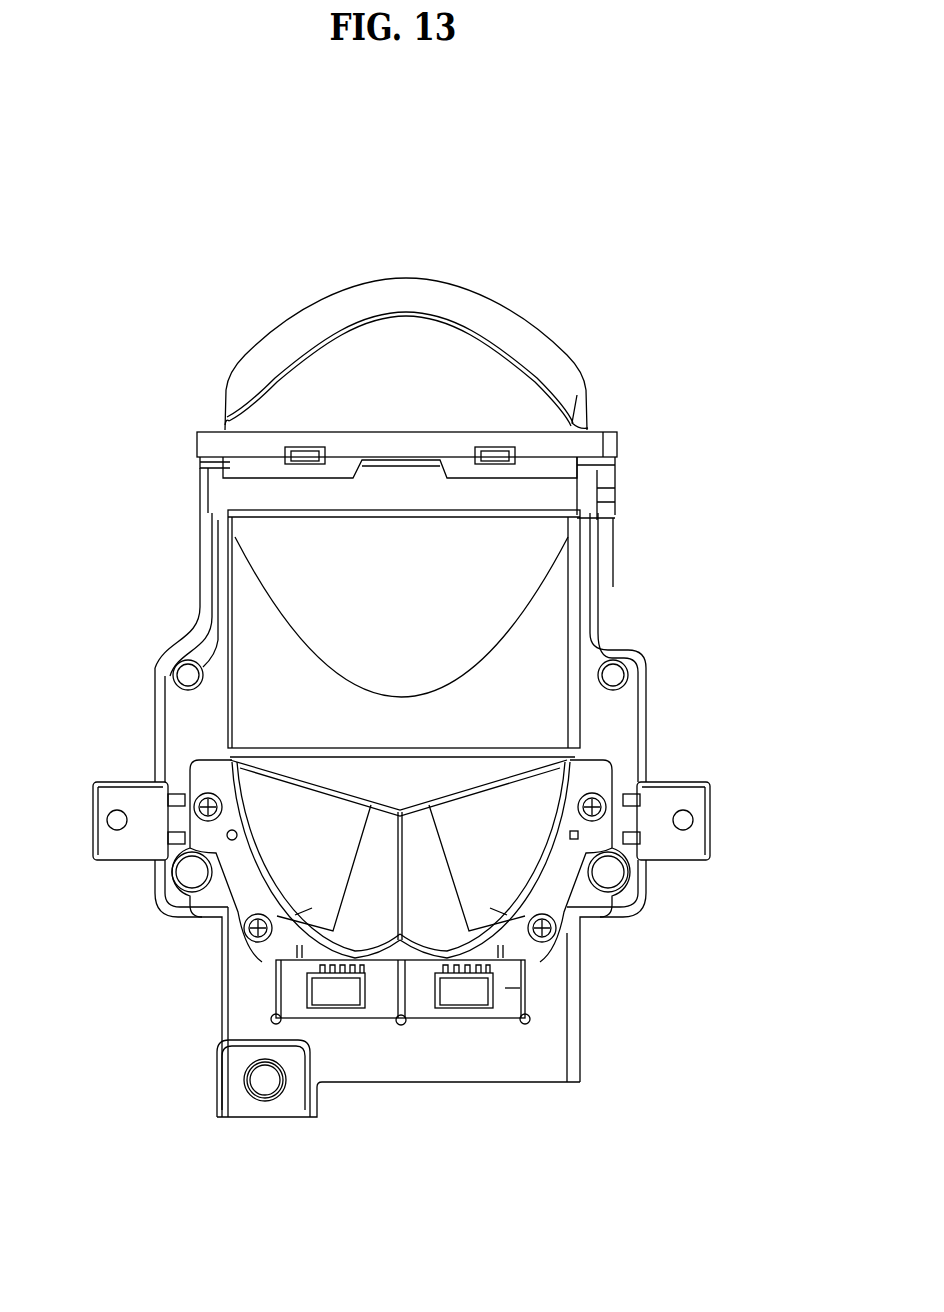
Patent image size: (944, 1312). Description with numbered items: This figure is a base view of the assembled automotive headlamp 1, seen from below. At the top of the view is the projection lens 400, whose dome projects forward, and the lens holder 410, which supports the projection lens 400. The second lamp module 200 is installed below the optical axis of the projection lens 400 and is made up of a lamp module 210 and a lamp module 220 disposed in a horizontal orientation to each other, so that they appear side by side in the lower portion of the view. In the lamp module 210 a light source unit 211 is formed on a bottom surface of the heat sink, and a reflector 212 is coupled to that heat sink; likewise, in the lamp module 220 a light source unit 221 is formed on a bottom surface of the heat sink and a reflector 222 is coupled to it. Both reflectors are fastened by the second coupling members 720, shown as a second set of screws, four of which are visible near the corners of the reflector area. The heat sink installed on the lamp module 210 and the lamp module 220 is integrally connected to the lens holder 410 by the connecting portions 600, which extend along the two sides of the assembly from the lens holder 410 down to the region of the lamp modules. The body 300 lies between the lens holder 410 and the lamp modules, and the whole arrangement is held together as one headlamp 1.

The automotive headlamp 1 is at (419, 204).
The second lamp module 200 is at (427, 1140).
The lamp module 210 is at (455, 1027).
The light source unit 211 is at (512, 993).
The reflector 212 is at (500, 913).
The lamp module 220 is at (345, 1027).
The light source unit 221 is at (290, 993).
The reflector 222 is at (303, 913).
The housing 300 is at (527, 677).
The projection lens 400 is at (483, 310).
The lens holder 410 is at (597, 490).
The connecting portions 600 is at (187, 740).
The second coupling members 720 is at (207, 812).